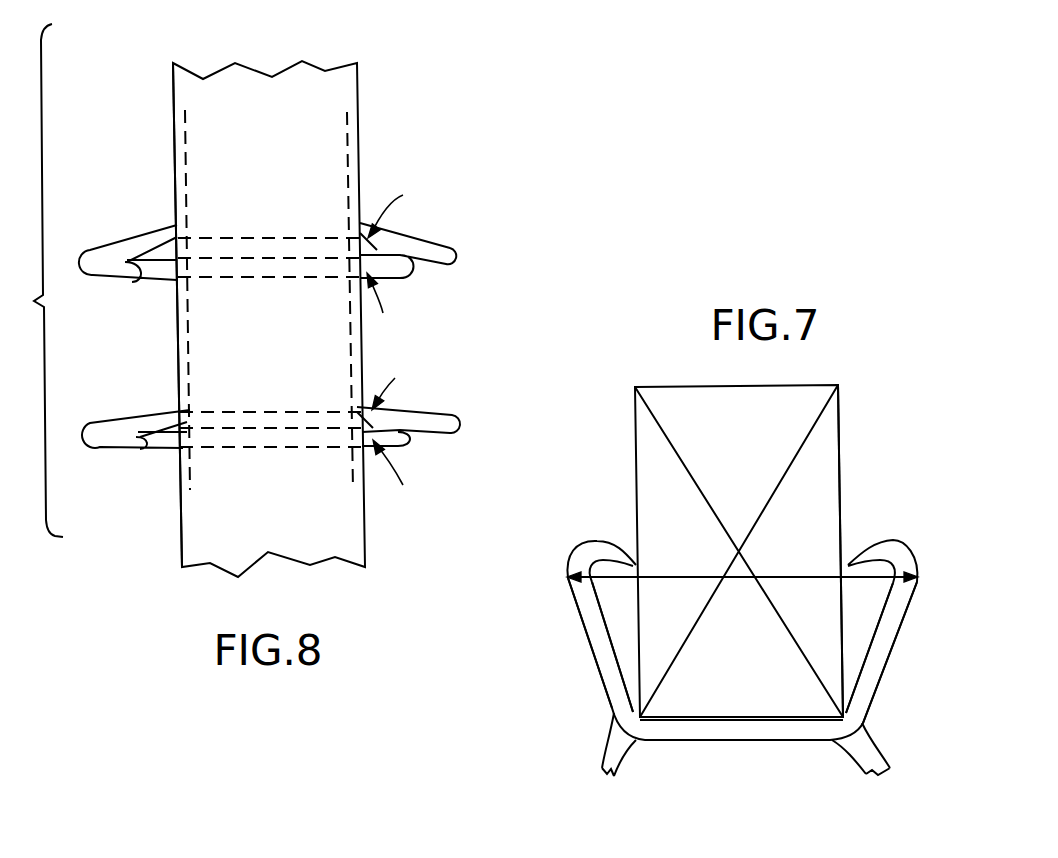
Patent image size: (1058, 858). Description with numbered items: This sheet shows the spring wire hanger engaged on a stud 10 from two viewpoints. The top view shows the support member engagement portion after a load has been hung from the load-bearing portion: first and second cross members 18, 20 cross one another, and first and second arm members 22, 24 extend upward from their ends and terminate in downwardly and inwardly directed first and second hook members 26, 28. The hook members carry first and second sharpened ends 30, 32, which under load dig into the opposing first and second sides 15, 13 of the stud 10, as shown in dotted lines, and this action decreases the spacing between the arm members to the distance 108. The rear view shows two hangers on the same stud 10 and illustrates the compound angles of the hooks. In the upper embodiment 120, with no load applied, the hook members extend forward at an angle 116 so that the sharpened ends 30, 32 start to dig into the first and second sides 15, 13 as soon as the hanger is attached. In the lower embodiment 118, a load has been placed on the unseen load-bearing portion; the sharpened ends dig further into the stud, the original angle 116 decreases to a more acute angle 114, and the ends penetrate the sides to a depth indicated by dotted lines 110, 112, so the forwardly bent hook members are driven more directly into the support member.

In FIG. 7, the stud 10 is at (623, 395).
In FIG. 8, the second side 13 is at (357, 80).
In FIG. 7, the second side 13 is at (635, 442).
In FIG. 8, the first side 15 is at (172, 97).
In FIG. 7, the first side 15 is at (840, 423).
In FIG. 8, the first cross member 18 is at (245, 267).
In FIG. 8, the second cross member 20 is at (243, 255).
In FIG. 7, the first arm member 22 is at (892, 627).
In FIG. 7, the second arm member 24 is at (597, 657).
In FIG. 7, the first hook member 26 is at (876, 548).
In FIG. 7, the second hook member 28 is at (612, 553).
In FIG. 8, the first sharpened end 30 is at (177, 237).
In FIG. 7, the first sharpened end 30 is at (828, 582).
In FIG. 8, the second sharpened end 32 is at (350, 237).
In FIG. 7, the second sharpened end 32 is at (663, 573).
In FIG. 7, the distance 108 is at (693, 580).
In FIG. 8, the dotted line 110 is at (347, 147).
In FIG. 8, the dotted line 112 is at (183, 143).
In FIG. 8, the acute angle 114 is at (405, 433).
In FIG. 8, the angle 116 is at (407, 257).
In FIG. 8, the lower embodiment 118 is at (432, 378).
In FIG. 8, the upper embodiment 120 is at (482, 192).